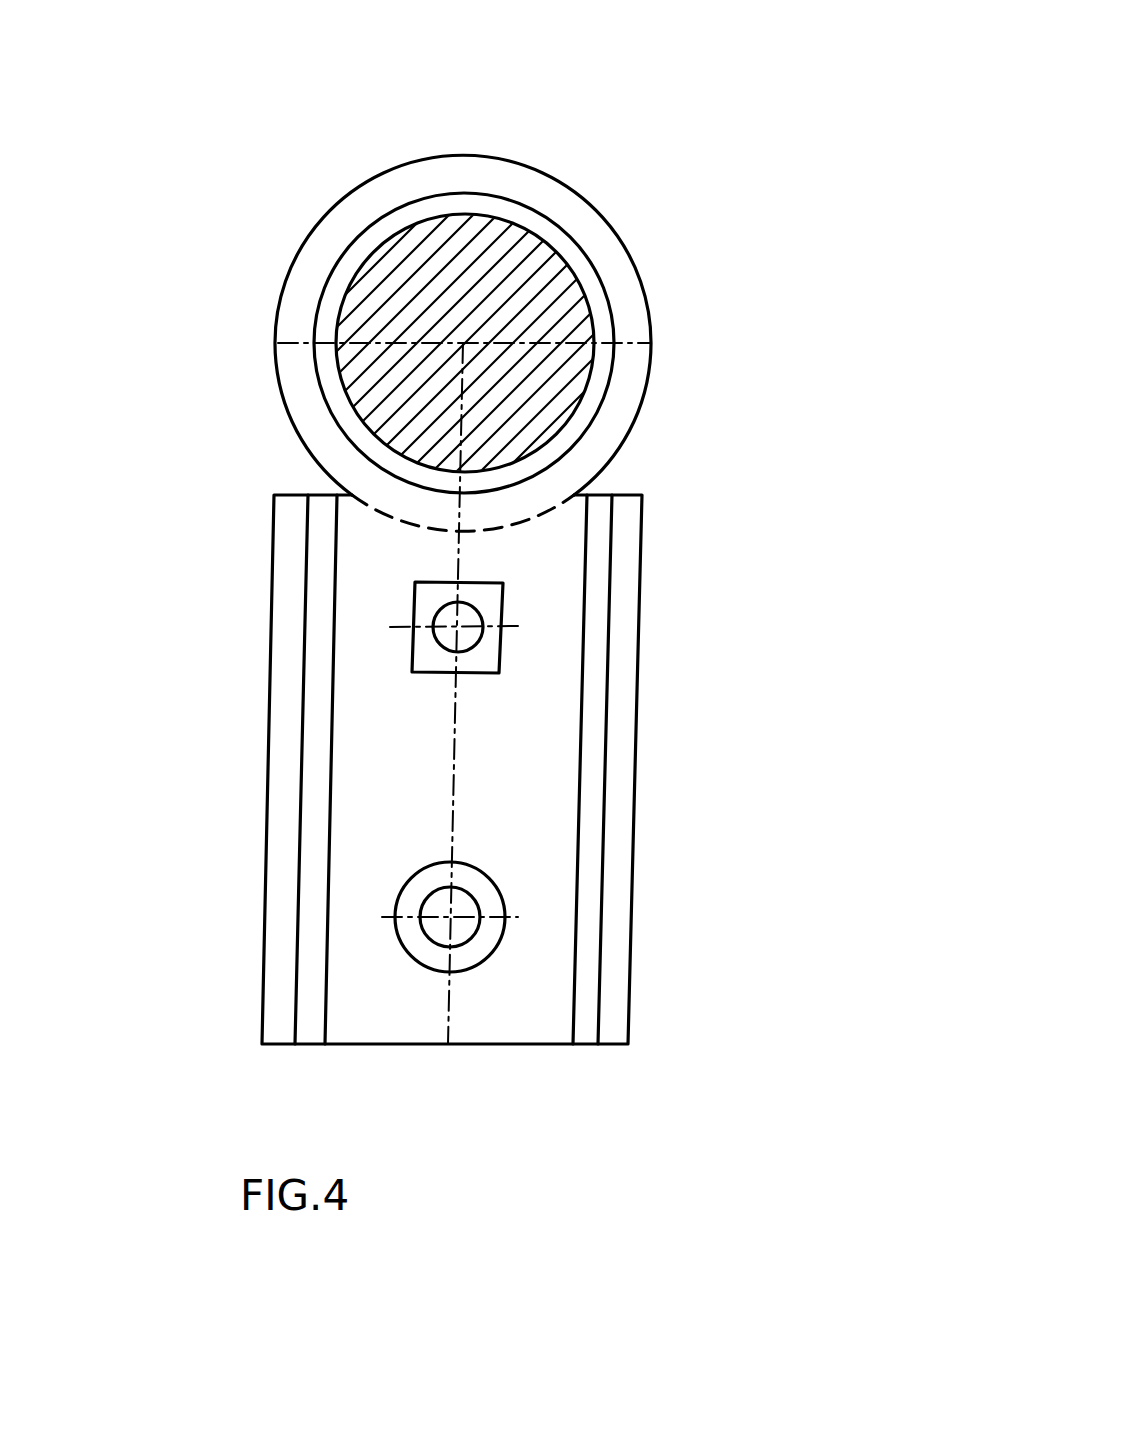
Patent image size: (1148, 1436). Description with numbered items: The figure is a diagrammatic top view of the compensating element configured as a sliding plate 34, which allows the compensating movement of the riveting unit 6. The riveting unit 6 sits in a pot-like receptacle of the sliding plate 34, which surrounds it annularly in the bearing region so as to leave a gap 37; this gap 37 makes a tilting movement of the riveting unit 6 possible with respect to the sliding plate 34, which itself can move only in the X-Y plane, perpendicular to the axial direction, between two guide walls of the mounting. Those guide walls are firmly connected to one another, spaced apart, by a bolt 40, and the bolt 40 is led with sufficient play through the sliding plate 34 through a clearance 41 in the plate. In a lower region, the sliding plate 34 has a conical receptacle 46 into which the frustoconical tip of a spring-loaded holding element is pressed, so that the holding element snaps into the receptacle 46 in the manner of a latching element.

The riveting unit 6 is at (495, 280).
The compensating element / sliding plate 34 is at (563, 1220).
The gap 37 is at (336, 314).
The bolt 40 is at (478, 617).
The clearance 41 is at (485, 648).
The conical receptacle 46 is at (483, 935).